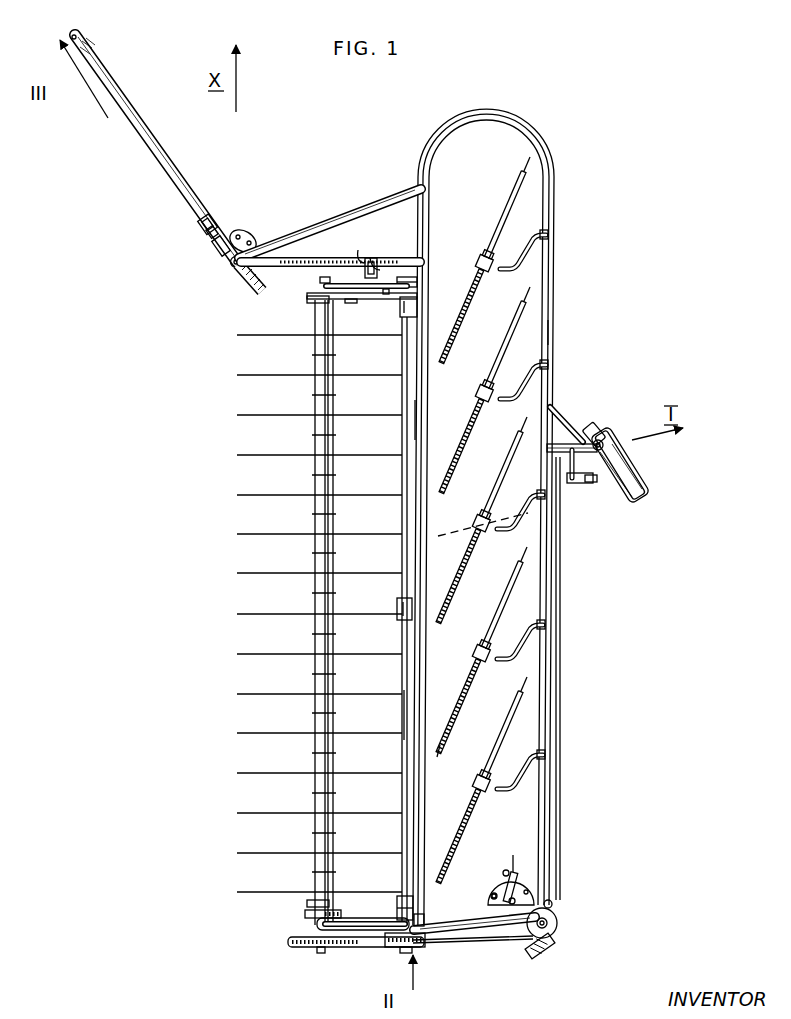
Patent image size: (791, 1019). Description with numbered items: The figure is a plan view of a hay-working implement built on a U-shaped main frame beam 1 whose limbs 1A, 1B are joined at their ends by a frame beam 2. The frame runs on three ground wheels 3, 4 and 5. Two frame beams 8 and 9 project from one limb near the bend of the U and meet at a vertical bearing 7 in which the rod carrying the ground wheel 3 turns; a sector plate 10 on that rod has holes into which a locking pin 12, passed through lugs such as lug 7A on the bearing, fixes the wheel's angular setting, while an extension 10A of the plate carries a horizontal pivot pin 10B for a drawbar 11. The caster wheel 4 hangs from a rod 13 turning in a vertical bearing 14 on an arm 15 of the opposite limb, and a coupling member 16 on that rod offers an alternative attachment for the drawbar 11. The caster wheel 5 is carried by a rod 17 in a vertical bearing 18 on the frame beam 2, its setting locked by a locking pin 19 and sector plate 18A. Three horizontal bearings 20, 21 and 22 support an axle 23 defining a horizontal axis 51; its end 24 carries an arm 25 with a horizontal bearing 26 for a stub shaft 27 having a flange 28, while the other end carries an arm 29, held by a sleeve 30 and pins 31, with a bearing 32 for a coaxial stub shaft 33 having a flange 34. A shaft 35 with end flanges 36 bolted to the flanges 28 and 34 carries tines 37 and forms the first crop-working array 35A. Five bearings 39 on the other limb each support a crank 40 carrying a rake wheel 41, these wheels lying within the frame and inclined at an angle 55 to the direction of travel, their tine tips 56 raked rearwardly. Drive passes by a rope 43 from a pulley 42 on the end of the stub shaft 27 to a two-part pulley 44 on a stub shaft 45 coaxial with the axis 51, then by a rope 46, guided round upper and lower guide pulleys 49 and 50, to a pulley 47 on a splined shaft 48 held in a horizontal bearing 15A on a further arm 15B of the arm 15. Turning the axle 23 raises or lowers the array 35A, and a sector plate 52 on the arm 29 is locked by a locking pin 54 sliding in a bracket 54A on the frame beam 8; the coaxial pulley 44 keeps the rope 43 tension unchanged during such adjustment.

The main frame beam 1 is at (452, 390).
The limb of the main frame beam 1A is at (428, 425).
The limb of the main frame beam 1B is at (551, 333).
The frame beam 2 is at (482, 915).
The ground wheel 3 is at (247, 290).
The ground wheel 4 is at (628, 465).
The ground wheel 5 is at (545, 948).
The vertical bearing 7 is at (232, 268).
The lug 7A is at (228, 258).
The frame beam 8 is at (328, 258).
The frame beam 9 is at (357, 211).
The sector plate 10 is at (240, 241).
The extension 10A is at (210, 233).
The pivot pin 10B is at (222, 218).
The drawbar 11 is at (165, 158).
The locking pin 12 is at (213, 247).
The rod 13 is at (618, 440).
The vertical bearing 14 is at (598, 426).
The arm 15 is at (547, 449).
The horizontal bearing 15A is at (586, 485).
The further arm 15B is at (567, 426).
The coupling member 16 is at (632, 481).
The rod 17 is at (522, 883).
The vertical bearing 18 is at (513, 870).
The sector plate 18A is at (490, 889).
The locking pin 19 is at (504, 878).
The horizontal bearing 20 is at (397, 905).
The horizontal bearing 21 is at (400, 610).
The horizontal bearing 22 is at (417, 305).
The axle 23 is at (404, 715).
The end of the axle 24 is at (427, 918).
The arm 25 is at (355, 920).
The horizontal bearing 26 is at (305, 930).
The stub shaft 27 is at (320, 952).
The flange 28 is at (305, 915).
The arm 29 is at (350, 303).
The sleeve 30 is at (414, 282).
The pin 31 is at (384, 293).
The horizontal bearing 32 is at (322, 286).
The stub shaft 33 is at (318, 279).
The flange 34 is at (307, 297).
The shaft 35 is at (318, 585).
The first crop-working array 35A is at (304, 527).
The flange 36 is at (308, 304).
The tine 37 is at (250, 698).
The horizontal bearing 39 is at (548, 628).
The crank 40 is at (513, 626).
The rake wheel 41 is at (505, 222).
The pad 42 is at (290, 948).
The rope 43 is at (365, 947).
The two-part pulley 44 is at (425, 945).
The stub shaft 45 is at (405, 950).
The rope 46 is at (562, 592).
The pulley 47 is at (572, 490).
The splined or keyed shaft 48 is at (596, 483).
The guide pulley 49 is at (558, 922).
The guide pulley 50 is at (553, 905).
The horizontal axis 51 is at (404, 758).
The sector plate 52 is at (392, 268).
The locking pin 54 is at (359, 252).
The bracket 54A is at (374, 262).
The angle 55 is at (437, 540).
The tips 56 is at (445, 750).